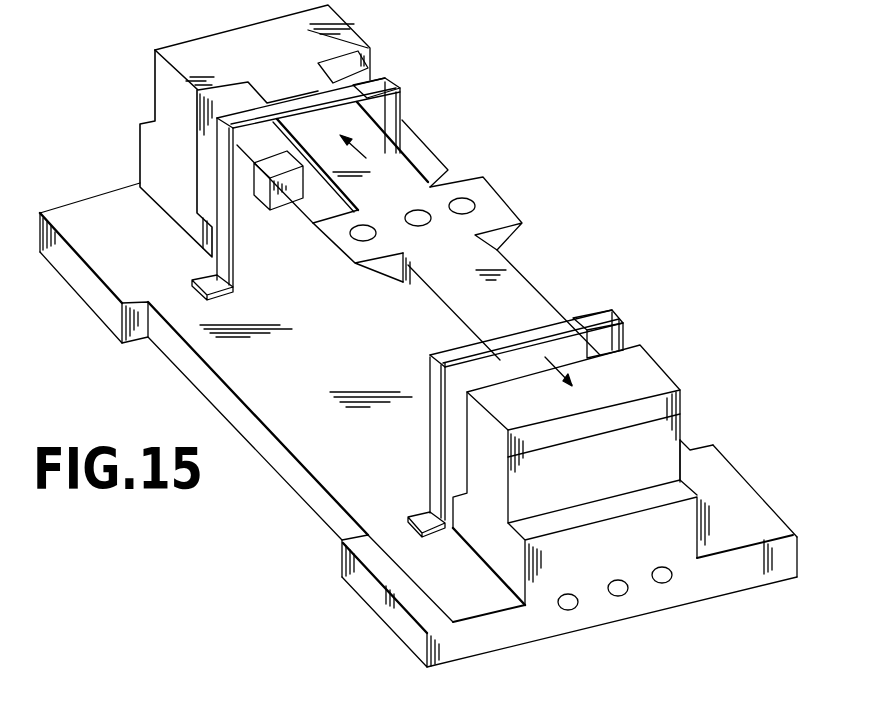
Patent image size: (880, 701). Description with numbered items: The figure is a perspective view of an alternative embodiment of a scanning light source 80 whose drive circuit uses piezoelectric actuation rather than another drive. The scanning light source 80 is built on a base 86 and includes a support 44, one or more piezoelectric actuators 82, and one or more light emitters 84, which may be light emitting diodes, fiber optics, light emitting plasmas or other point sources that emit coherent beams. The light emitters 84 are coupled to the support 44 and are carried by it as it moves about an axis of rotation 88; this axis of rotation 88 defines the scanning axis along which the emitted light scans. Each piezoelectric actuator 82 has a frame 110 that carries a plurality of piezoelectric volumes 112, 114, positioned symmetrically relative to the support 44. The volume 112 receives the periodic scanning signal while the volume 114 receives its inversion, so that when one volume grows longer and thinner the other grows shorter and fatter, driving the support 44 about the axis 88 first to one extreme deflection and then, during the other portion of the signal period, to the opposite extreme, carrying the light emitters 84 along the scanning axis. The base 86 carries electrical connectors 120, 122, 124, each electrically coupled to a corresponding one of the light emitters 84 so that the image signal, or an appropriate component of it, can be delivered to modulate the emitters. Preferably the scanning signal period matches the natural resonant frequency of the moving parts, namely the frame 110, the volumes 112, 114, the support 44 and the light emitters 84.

The scanning light source 80 is at (630, 155).
The piezoelectric actuator 82 is at (410, 68).
The light emitter 84 is at (365, 228).
The base 86 is at (346, 356).
The axis of rotation 88 is at (563, 372).
The support 44 is at (497, 304).
The frame 110 is at (233, 266).
The piezoelectric volume 112 is at (247, 116).
The piezoelectric volume 114 is at (386, 80).
The electrical connector 120 is at (572, 608).
The electrical connector 122 is at (622, 594).
The electrical connector 124 is at (667, 578).